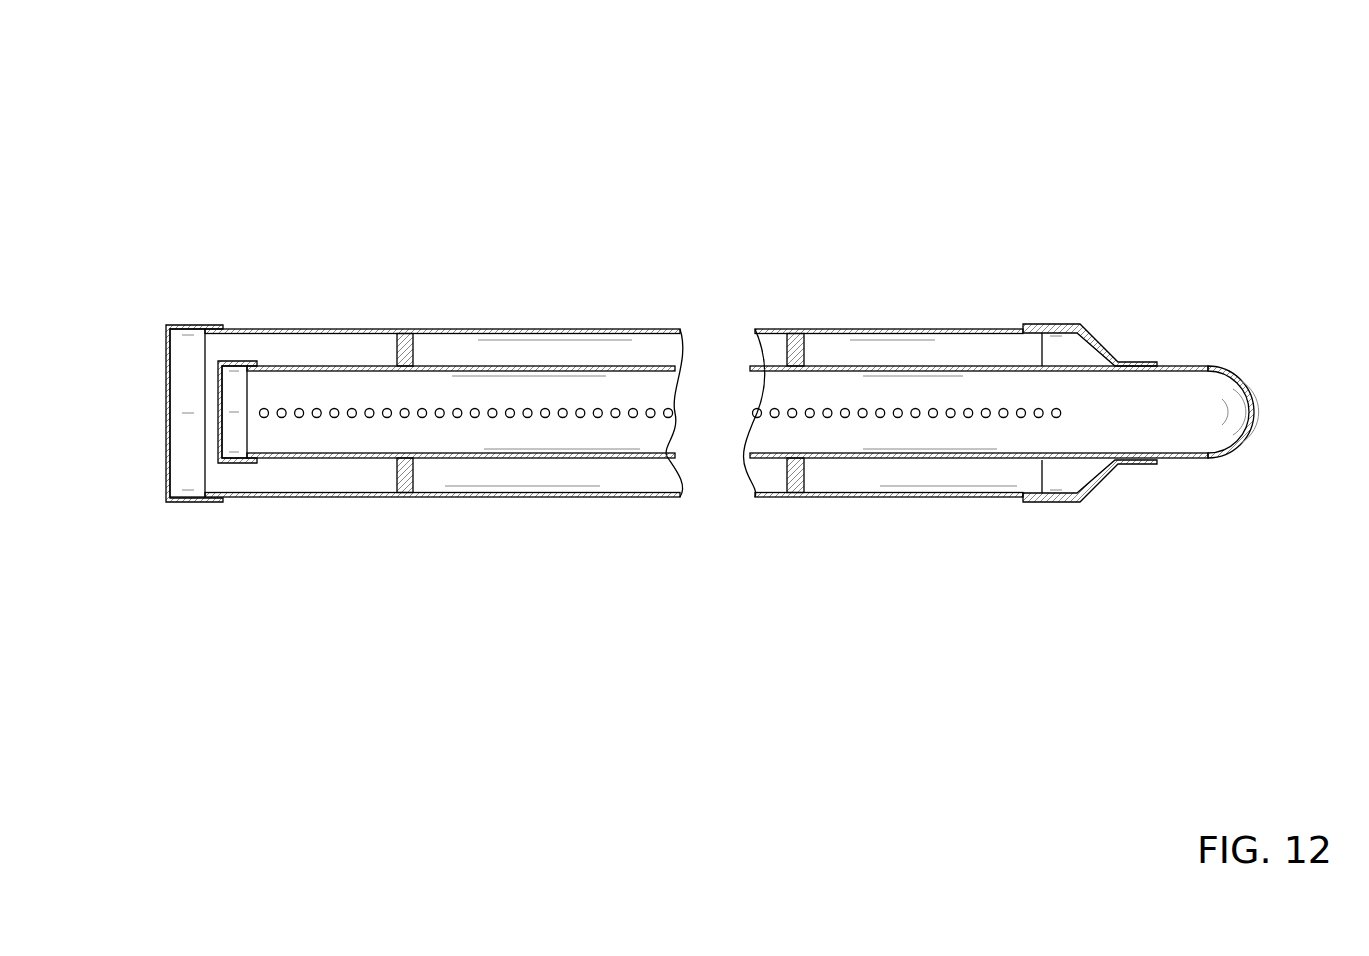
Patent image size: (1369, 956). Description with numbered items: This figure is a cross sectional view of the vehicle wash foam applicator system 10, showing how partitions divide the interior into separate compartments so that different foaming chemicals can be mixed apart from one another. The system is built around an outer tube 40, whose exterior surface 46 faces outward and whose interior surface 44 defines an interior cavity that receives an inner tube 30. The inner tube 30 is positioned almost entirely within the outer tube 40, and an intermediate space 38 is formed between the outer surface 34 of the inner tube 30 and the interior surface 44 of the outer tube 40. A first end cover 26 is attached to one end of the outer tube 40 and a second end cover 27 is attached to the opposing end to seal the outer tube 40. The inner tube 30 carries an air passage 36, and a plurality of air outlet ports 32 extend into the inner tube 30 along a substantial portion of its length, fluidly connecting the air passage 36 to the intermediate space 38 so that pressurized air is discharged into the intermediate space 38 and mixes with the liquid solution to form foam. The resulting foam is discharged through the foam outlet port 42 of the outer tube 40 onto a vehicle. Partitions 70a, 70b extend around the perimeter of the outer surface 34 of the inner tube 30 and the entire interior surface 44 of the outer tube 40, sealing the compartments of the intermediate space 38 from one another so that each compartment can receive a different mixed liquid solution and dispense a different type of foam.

The vehicle wash foam applicator system 10 is at (241, 141).
The first end cover 26 is at (1098, 481).
The second end cover 27 is at (167, 425).
The inner tube 30 is at (437, 365).
The air outlet port 32 is at (300, 407).
The outer surface 34 is at (943, 365).
The air passage 36 is at (333, 390).
The intermediate space 38 is at (642, 355).
The outer tube 40 is at (563, 331).
The foam outlet port 42 is at (320, 497).
The interior surface 44 is at (840, 334).
The exterior surface 46 is at (487, 365).
The partition 70a is at (413, 487).
The partition 70b is at (787, 478).